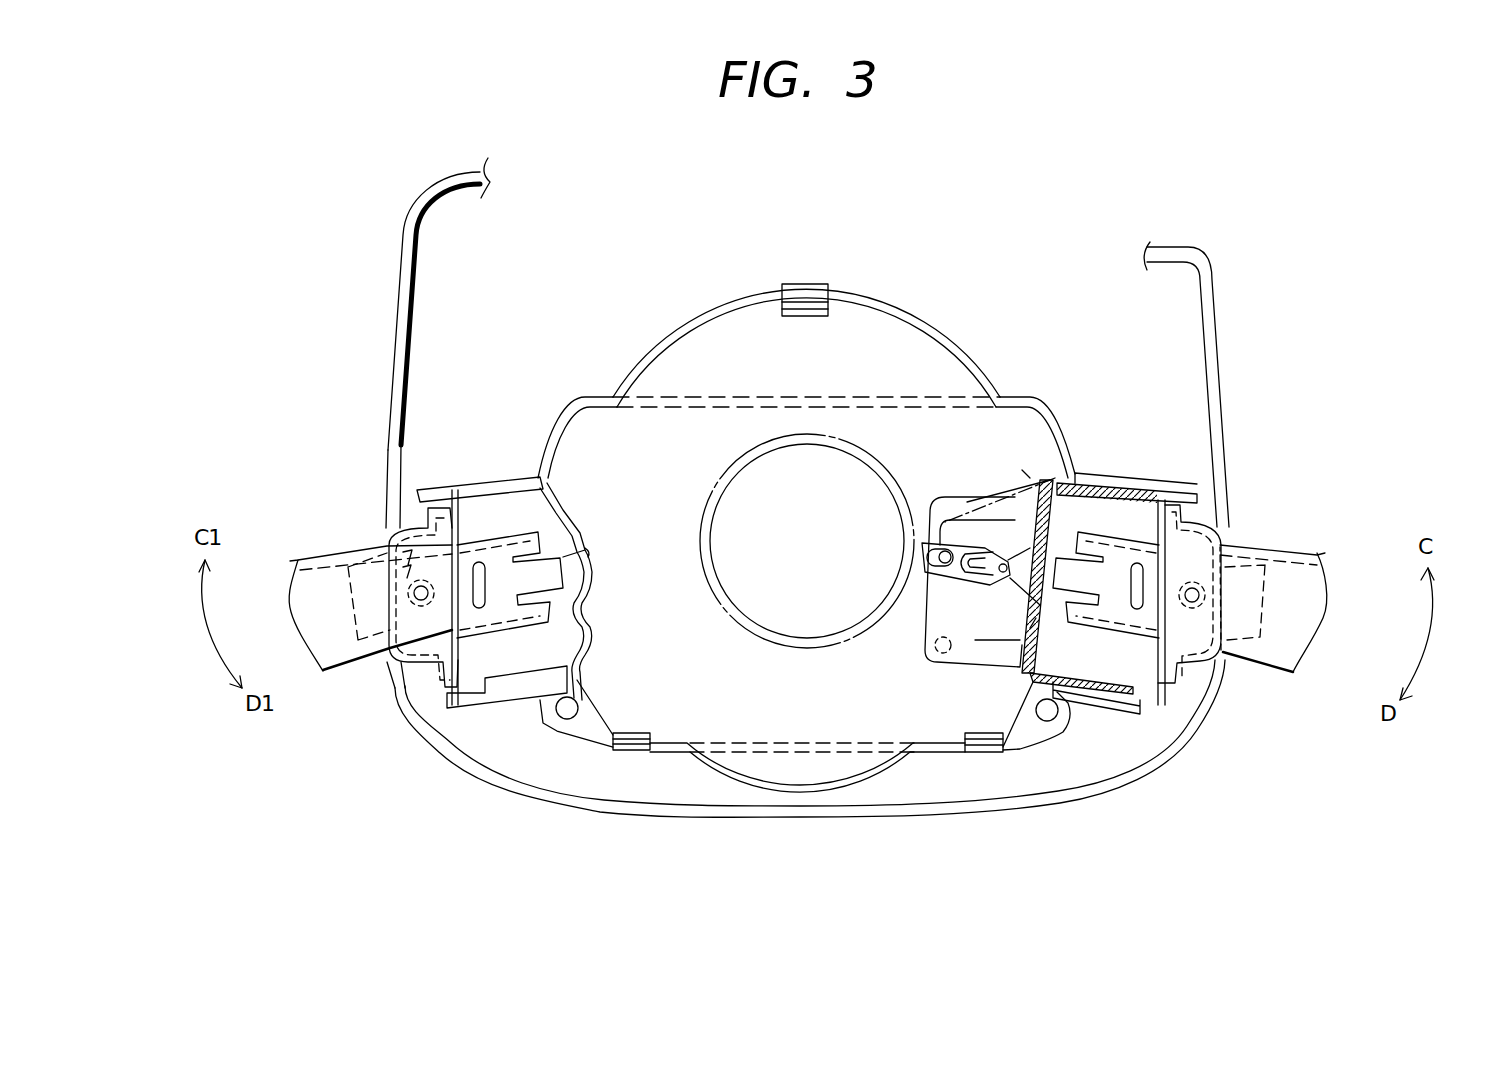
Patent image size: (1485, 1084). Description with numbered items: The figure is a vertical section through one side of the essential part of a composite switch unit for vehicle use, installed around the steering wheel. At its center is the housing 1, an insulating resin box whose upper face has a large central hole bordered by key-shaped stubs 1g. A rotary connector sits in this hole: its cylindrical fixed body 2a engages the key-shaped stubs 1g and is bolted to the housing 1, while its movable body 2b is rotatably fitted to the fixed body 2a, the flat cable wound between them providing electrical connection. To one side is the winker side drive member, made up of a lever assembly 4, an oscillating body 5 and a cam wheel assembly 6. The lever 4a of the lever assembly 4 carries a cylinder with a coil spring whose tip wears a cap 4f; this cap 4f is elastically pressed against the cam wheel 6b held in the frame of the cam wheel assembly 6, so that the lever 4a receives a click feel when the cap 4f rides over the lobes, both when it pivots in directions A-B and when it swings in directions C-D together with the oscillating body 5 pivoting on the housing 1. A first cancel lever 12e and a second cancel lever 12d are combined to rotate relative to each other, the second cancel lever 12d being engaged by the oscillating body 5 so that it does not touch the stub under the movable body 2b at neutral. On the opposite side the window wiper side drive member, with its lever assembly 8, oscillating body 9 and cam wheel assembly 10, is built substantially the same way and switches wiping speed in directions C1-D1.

The housing 1 is at (672, 335).
The key-shaped stubs 1g is at (784, 284).
The fixed body 2a is at (850, 292).
The movable body 2b is at (899, 352).
The lever assembly 4 is at (1238, 675).
The lever 4a is at (340, 672).
The cap 4f is at (598, 598).
The oscillating body 5 is at (1157, 706).
The cam wheel assembly 6 is at (1102, 476).
The cam wheel 6b is at (589, 550).
The lever assembly 8 is at (372, 672).
The oscillating body 9 is at (432, 478).
The cam wheel assembly 10 is at (535, 497).
The second cancel lever 12d is at (966, 550).
The first cancel lever 12e is at (927, 546).